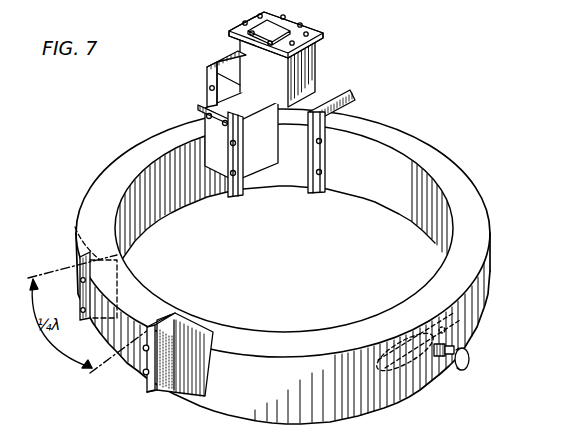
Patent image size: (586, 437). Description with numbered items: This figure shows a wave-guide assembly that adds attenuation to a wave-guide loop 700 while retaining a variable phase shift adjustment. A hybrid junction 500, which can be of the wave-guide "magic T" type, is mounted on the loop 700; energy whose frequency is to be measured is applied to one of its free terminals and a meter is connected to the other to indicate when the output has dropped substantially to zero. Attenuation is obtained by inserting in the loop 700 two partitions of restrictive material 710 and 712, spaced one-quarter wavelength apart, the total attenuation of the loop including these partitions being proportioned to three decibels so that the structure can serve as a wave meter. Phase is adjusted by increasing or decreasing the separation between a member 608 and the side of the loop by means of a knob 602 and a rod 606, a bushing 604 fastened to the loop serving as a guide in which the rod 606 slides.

The hybrid junction 500 is at (310, 62).
The wave-guide loop 700 is at (427, 147).
The partition of restrictive material 712 is at (84, 232).
The partition of restrictive material 710 is at (147, 387).
The member 608 is at (458, 317).
The bushing 604 is at (446, 347).
The rod 606 is at (455, 349).
The knob 602 is at (468, 363).